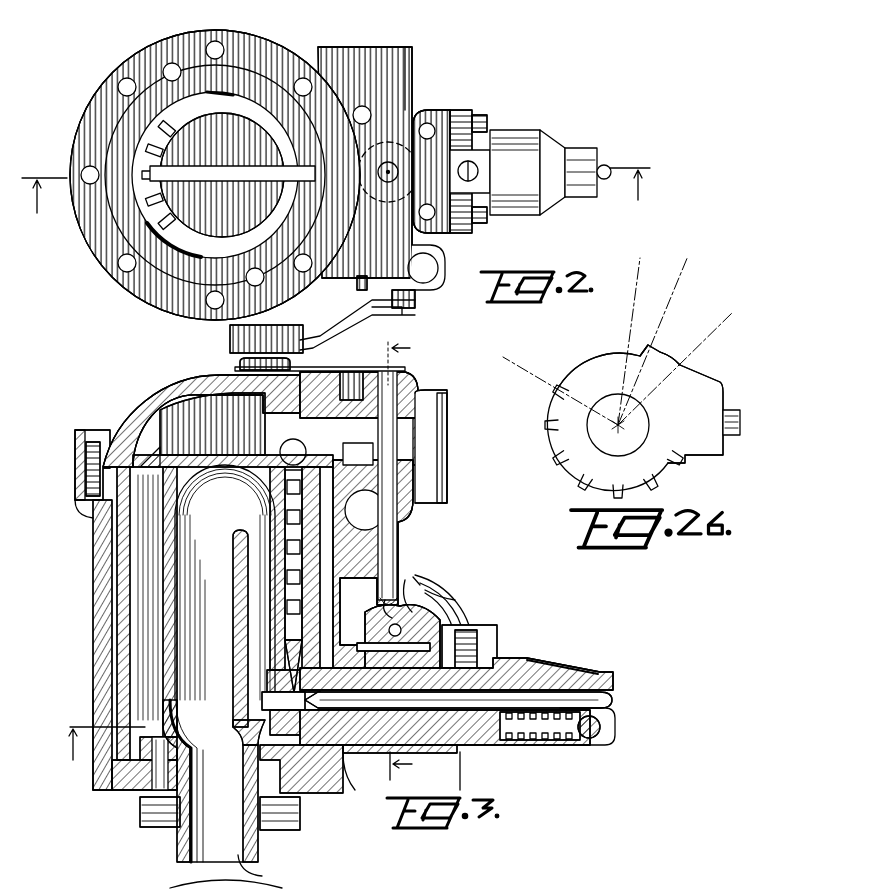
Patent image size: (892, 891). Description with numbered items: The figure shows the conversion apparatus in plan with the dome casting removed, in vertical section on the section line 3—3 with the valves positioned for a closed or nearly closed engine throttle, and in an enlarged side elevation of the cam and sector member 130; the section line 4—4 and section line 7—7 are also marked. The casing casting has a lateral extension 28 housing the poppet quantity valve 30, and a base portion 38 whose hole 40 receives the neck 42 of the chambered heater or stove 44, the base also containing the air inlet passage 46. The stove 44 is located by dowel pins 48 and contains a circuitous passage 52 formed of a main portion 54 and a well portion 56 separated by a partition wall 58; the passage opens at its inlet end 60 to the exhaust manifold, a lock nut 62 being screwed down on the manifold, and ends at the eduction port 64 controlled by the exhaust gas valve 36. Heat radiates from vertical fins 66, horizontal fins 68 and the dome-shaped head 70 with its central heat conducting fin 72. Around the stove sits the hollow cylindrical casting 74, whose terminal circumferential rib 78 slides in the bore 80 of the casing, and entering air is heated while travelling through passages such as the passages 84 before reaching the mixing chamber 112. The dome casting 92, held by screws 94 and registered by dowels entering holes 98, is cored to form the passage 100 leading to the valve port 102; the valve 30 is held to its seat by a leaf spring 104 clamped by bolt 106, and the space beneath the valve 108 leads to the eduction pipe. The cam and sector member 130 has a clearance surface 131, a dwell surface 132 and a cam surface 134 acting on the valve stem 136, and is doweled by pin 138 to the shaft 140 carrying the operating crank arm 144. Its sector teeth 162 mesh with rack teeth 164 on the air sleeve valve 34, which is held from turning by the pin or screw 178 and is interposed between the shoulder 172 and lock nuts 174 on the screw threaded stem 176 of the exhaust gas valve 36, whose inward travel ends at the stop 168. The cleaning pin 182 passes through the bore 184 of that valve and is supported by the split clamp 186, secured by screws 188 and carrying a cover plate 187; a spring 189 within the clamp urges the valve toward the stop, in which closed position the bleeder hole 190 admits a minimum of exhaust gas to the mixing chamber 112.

In FIG. 2, the section line 3— 3 is at (336, 200).
In FIG. 3, the section line 4— 4 is at (269, 758).
In FIG. 3, the section line 7— 7 is at (409, 560).
In FIG. 3, the lateral extension 28 is at (415, 547).
In FIG. 2, the poppet quantity valve 30 is at (398, 140).
In FIG. 3, the poppet quantity valve 30 is at (438, 453).
In FIG. 3, the air sleeve valve 34 is at (443, 750).
In FIG. 3, the exhaust gas valve 36 is at (270, 687).
In FIG. 3, the base portion 38 is at (128, 794).
In FIG. 3, the hole 40 is at (178, 828).
In FIG. 3, the neck 42 is at (214, 781).
In FIG. 3, the chambered heater 44 is at (167, 598).
In FIG. 3, the air inlet passage 46 is at (108, 793).
In FIG. 3, the dowel pins 48 is at (155, 770).
In FIG. 3, the circuitous passage 52 is at (205, 628).
In FIG. 3, the main portion 54 is at (200, 678).
In FIG. 3, the well portion 56 is at (258, 570).
In FIG. 3, the partition wall 58 is at (233, 592).
In FIG. 3, the inlet end 60 is at (261, 869).
In FIG. 3, the lock nut 62 is at (300, 815).
In FIG. 3, the eduction port 64 is at (282, 662).
In FIG. 2, the vertical fins 66 is at (143, 140).
In FIG. 3, the vertical fins 66 is at (143, 510).
In FIG. 2, the horizontal fins 68 is at (228, 100).
In FIG. 3, the horizontal fins 68 is at (290, 628).
In FIG. 2, the dome-shaped head 70 is at (205, 245).
In FIG. 2, the central heat conducting fin 72 is at (228, 180).
In FIG. 3, the central heat conducting fin 72 is at (190, 405).
In FIG. 3, the hollow cylindrical casting 74 is at (127, 550).
In FIG. 3, the terminal circumferential rib 78 is at (93, 470).
In FIG. 3, the bore 80 is at (93, 703).
In FIG. 3, the passages 84 is at (215, 881).
In FIG. 3, the dome casting 92 is at (140, 417).
In FIG. 3, the screws 94 is at (75, 437).
In FIG. 2, the holes 98 is at (232, 326).
In FIG. 3, the passage 100 is at (147, 440).
In FIG. 3, the valve port 102 is at (437, 475).
In FIG. 3, the leaf spring 104 is at (350, 366).
In FIG. 3, the bolt 106 is at (243, 367).
In FIG. 3, the space beneath the valve 108 is at (432, 507).
In FIG. 3, the mixing chamber 112 is at (290, 440).
In FIG. 26, the cam and sector member 130 is at (680, 397).
In FIG. 3, the cam and sector member 130 is at (458, 619).
In FIG. 26, the clearance surface 131 is at (600, 360).
In FIG. 3, the clearance surface 131 is at (425, 567).
In FIG. 26, the dwell surface 132 is at (660, 345).
In FIG. 3, the dwell surface 132 is at (420, 572).
In FIG. 26, the cam surface 134 is at (682, 368).
In FIG. 3, the cam surface 134 is at (425, 590).
In FIG. 3, the valve stem 136 is at (410, 526).
In FIG. 26, the dowel pin 138 is at (727, 438).
In FIG. 3, the dowel pin 138 is at (478, 633).
In FIG. 3, the shaft 140 is at (462, 610).
In FIG. 2, the operating crank arm 144 is at (262, 335).
In FIG. 26, the sector teeth 162 is at (585, 487).
In FIG. 3, the sector teeth 162 is at (380, 600).
In FIG. 3, the rack teeth 164 is at (380, 612).
In FIG. 3, the stop 168 is at (262, 733).
In FIG. 3, the shoulder 172 is at (343, 756).
In FIG. 3, the lock nuts 174 is at (460, 741).
In FIG. 3, the screw threaded stem 176 is at (557, 662).
In FIG. 3, the pin or screw 178 is at (385, 746).
In FIG. 3, the cleaning pin 182 is at (500, 660).
In FIG. 3, the bore 184 is at (257, 715).
In FIG. 2, the split clamp 186 is at (560, 148).
In FIG. 3, the split clamp 186 is at (604, 685).
In FIG. 3, the cover plate 187 is at (450, 600).
In FIG. 2, the screws 188 is at (483, 120).
In FIG. 3, the spring 189 is at (567, 674).
In FIG. 3, the bleeder hole 190 is at (262, 705).